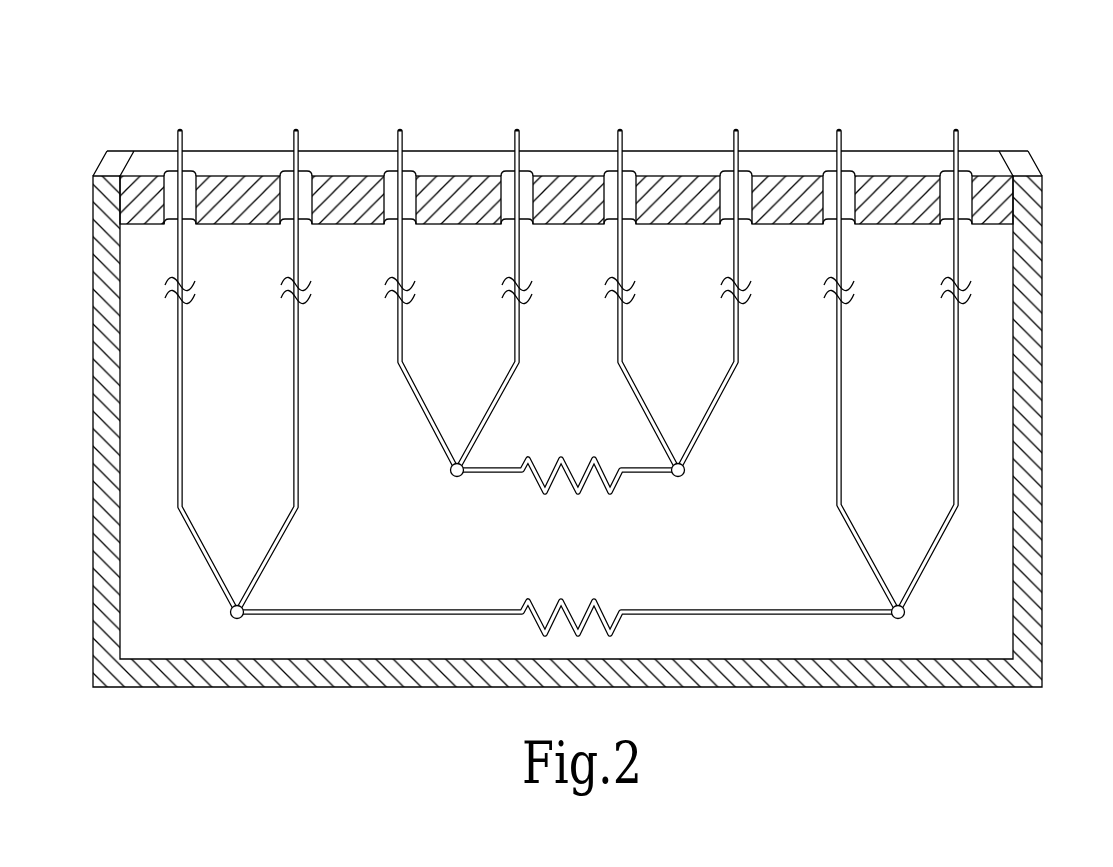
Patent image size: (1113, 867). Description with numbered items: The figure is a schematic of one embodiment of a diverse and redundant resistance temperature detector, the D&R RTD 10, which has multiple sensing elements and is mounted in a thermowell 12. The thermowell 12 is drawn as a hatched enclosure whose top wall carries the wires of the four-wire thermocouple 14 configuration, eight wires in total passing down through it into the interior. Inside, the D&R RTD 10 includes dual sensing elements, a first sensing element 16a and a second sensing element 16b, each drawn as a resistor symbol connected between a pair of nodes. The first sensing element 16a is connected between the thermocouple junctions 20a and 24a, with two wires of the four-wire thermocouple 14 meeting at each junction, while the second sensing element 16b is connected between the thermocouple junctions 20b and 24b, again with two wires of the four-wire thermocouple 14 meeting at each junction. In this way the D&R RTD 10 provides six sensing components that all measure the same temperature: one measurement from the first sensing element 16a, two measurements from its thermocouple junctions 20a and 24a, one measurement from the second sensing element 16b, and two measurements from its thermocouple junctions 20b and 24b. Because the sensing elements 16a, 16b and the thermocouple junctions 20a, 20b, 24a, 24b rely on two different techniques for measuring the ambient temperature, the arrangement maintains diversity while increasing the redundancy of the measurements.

The D&R RTD 10 is at (1053, 142).
The thermowell 12 is at (92, 153).
The four-wire thermocouple 14 is at (188, 127).
The first sensing element 16a is at (572, 450).
The second sensing element 16b is at (577, 593).
The thermocouple junction 20a is at (458, 475).
The thermocouple junction 20b is at (237, 619).
The thermocouple junction 24a is at (680, 472).
The thermocouple junction 24b is at (895, 620).